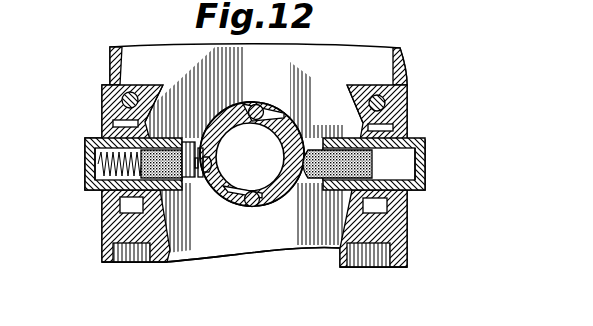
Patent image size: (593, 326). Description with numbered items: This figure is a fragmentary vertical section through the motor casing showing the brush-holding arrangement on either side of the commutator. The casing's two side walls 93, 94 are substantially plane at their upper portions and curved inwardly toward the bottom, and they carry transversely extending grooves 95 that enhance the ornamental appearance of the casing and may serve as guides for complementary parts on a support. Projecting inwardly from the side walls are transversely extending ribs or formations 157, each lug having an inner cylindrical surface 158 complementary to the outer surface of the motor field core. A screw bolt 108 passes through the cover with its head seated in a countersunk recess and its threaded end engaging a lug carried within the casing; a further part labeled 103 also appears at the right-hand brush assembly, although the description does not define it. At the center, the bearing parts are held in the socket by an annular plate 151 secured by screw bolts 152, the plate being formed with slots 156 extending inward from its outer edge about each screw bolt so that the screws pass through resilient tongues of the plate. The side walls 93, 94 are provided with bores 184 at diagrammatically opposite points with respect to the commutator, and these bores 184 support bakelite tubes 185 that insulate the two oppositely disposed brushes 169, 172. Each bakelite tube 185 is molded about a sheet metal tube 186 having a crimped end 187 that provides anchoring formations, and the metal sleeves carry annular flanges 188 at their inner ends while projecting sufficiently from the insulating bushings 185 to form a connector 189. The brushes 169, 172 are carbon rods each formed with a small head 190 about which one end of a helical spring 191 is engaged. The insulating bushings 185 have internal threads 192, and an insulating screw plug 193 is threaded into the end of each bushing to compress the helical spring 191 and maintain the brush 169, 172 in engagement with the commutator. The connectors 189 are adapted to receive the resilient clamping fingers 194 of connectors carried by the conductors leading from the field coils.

The side wall 93 is at (408, 93).
The side wall 94 is at (102, 90).
The transversely extending grooves 95 is at (402, 62).
The right housing end cap 103 is at (427, 165).
The screw bolt 108 is at (130, 100).
The annular plate 151 is at (247, 222).
The screw bolts 152 is at (243, 262).
The slots 156 is at (273, 262).
The ribs or formations 157 is at (138, 87).
The inner cylindrical surface 158 is at (163, 98).
The brush 169 is at (305, 145).
The brush 172 is at (185, 140).
The bores 184 is at (108, 136).
The bakelite tubes 185 is at (115, 213).
The sheet metal tube 186 is at (108, 238).
The crimped end 187 is at (418, 180).
The annular flanges 188 is at (262, 205).
The connector 189 is at (318, 150).
The head 190 is at (112, 188).
The helical spring 191 is at (86, 186).
The internal threads 192 is at (85, 146).
The insulating screw plug 193 is at (85, 172).
The resilient clamping fingers 194 is at (190, 188).